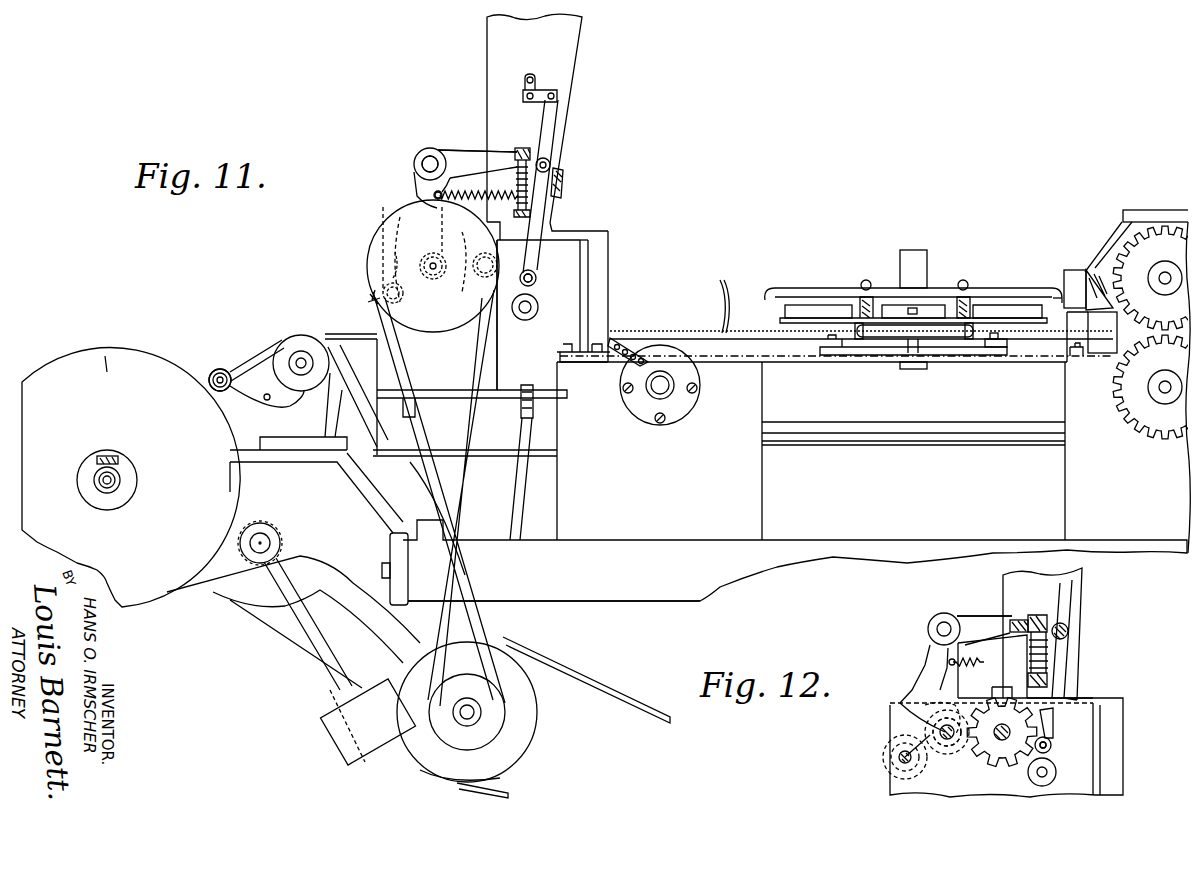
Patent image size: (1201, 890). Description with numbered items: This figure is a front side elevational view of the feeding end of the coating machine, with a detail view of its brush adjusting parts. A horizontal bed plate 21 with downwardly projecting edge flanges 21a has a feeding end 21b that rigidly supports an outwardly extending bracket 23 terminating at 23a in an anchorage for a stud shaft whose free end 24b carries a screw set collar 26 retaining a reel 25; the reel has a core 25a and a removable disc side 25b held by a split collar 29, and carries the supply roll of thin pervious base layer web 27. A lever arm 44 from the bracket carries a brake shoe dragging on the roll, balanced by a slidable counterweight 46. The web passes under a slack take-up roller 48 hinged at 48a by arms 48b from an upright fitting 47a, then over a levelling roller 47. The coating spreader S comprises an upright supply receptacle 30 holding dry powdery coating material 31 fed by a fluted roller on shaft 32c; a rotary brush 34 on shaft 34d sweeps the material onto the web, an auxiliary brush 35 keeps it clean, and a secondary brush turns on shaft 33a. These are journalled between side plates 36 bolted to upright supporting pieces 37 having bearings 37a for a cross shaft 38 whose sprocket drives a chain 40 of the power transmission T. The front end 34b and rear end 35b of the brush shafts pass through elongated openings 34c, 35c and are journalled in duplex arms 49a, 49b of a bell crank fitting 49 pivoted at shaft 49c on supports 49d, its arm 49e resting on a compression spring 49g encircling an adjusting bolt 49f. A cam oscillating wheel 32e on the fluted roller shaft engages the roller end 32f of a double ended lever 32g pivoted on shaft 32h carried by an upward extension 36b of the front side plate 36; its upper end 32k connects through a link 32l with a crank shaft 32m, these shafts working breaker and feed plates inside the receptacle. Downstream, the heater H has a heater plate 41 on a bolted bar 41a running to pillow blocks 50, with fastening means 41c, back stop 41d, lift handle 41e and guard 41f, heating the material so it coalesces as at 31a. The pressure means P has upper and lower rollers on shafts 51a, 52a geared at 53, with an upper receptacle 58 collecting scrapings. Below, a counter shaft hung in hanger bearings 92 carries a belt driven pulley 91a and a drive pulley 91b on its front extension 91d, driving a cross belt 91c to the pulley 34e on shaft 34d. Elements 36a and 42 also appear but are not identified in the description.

In FIG. 11, the bed plate 21 is at (902, 540).
In FIG. 11, the edge flanges 21a is at (640, 602).
In FIG. 11, the feeding end 21b is at (400, 548).
In FIG. 11, the bracket 23 is at (316, 493).
In FIG. 11, the bracket terminal 23a is at (264, 562).
In FIG. 11, the free end of stud shaft 24b is at (99, 481).
In FIG. 11, the reel 25 is at (52, 359).
In FIG. 11, the core 25a is at (107, 494).
In FIG. 11, the disc side 25b is at (107, 372).
In FIG. 11, the screw set collar 26 is at (117, 478).
In FIG. 11, the base layer web 27 is at (262, 362).
In FIG. 11, the split collar 29 is at (88, 498).
In FIG. 11, the supply receptacle 30 is at (555, 45).
In FIG. 12, the supply receptacle 30 is at (1042, 634).
In FIG. 11, the coating material 31 is at (715, 297).
In FIG. 11, the coalesced coating material 31a is at (1065, 332).
In FIG. 12, the fluted roller shaft 32c is at (1002, 741).
In FIG. 11, the cam oscillating wheel 32e is at (515, 264).
In FIG. 12, the cam oscillating wheel 32e is at (1036, 748).
In FIG. 11, the roller end 32f is at (537, 286).
In FIG. 12, the roller end 32f is at (1052, 745).
In FIG. 11, the double ended lever 32g is at (556, 222).
In FIG. 12, the double ended lever 32g is at (1060, 720).
In FIG. 11, the pivot shaft 32h is at (550, 166).
In FIG. 12, the pivot shaft 32h is at (1069, 631).
In FIG. 11, the upper lever end 32k is at (552, 120).
In FIG. 12, the upper lever end 32k is at (1066, 595).
In FIG. 11, the link 32l is at (558, 95).
In FIG. 11, the crank shaft 32m is at (526, 78).
In FIG. 11, the secondary brush shaft 33a is at (527, 320).
In FIG. 12, the secondary brush shaft 33a is at (1047, 770).
In FIG. 11, the rotary brush 34 is at (433, 266).
In FIG. 12, the front brush shaft end 34b is at (945, 732).
In FIG. 12, the elongated opening 34c is at (945, 732).
In FIG. 11, the brush shaft 34d is at (434, 278).
In FIG. 11, the brush pulley 34e is at (434, 332).
In FIG. 11, the auxiliary rotary brush 35 is at (375, 295).
In FIG. 12, the auxiliary brush shaft end 35b is at (903, 760).
In FIG. 12, the elongated opening 35c is at (903, 757).
In FIG. 11, the side plates 36 is at (590, 280).
In FIG. 12, the side plates 36 is at (1120, 773).
In FIG. 11, the post flange 36a is at (540, 322).
In FIG. 11, the upward extension 36b is at (556, 228).
In FIG. 12, the upward extension 36b is at (1068, 680).
In FIG. 11, the upright supporting pieces 37 is at (742, 512).
In FIG. 11, the bearings 37a is at (672, 410).
In FIG. 11, the cross shaft 38 is at (663, 380).
In FIG. 11, the chain 40 is at (630, 348).
In FIG. 11, the heater plate 41 is at (815, 305).
In FIG. 11, the bolted bar 41a is at (878, 358).
In FIG. 11, the fastening means 41c is at (912, 312).
In FIG. 11, the back stop 41d is at (900, 263).
In FIG. 11, the lift handle 41e is at (945, 338).
In FIG. 11, the guard 41f is at (1003, 288).
In FIG. 11, the rails 42 is at (830, 432).
In FIG. 11, the lever arm 44 is at (199, 582).
In FIG. 11, the counterweight 46 is at (340, 735).
In FIG. 11, the levelling roller 47 is at (296, 337).
In FIG. 11, the upright fitting 47a is at (285, 412).
In FIG. 11, the slack take-up roller 48 is at (215, 375).
In FIG. 11, the hinge 48a is at (305, 358).
In FIG. 11, the arms 48b is at (228, 372).
In FIG. 11, the bell crank fitting 49 is at (449, 144).
In FIG. 12, the bell crank fitting 49 is at (935, 614).
In FIG. 11, the duplex arm 49a is at (422, 164).
In FIG. 12, the duplex arm 49a is at (950, 745).
In FIG. 11, the duplex arm 49b is at (386, 252).
In FIG. 12, the duplex arm 49b is at (925, 737).
In FIG. 11, the pivot shaft 49c is at (429, 163).
In FIG. 12, the pivot shaft 49c is at (946, 624).
In FIG. 12, the supports 49d is at (918, 688).
In FIG. 11, the bell crank arm 49e is at (476, 155).
In FIG. 12, the bell crank arm 49e is at (979, 618).
In FIG. 11, the bolt 49f is at (530, 150).
In FIG. 12, the bolt 49f is at (1047, 628).
In FIG. 11, the compression spring 49g is at (500, 204).
In FIG. 12, the compression spring 49g is at (1047, 662).
In FIG. 11, the pillow blocks 50 is at (1083, 480).
In FIG. 11, the upper shaft 51a is at (1164, 272).
In FIG. 11, the lower shaft 52a is at (1164, 392).
In FIG. 11, the gearing 53 is at (1137, 372).
In FIG. 11, the upper receptacle 58 is at (1068, 282).
In FIG. 11, the belt driven pulley 91a is at (527, 712).
In FIG. 11, the drive pulley 91b is at (482, 735).
In FIG. 11, the cross belt 91c is at (430, 462).
In FIG. 11, the front overhanging extension 91d is at (470, 715).
In FIG. 11, the hanger bearings 92 is at (462, 640).
In FIG. 11, the heater H is at (947, 246).
In FIG. 11, the pressure means P is at (1110, 205).
In FIG. 11, the coating spreader S is at (626, 220).
In FIG. 11, the power transmission T is at (538, 655).